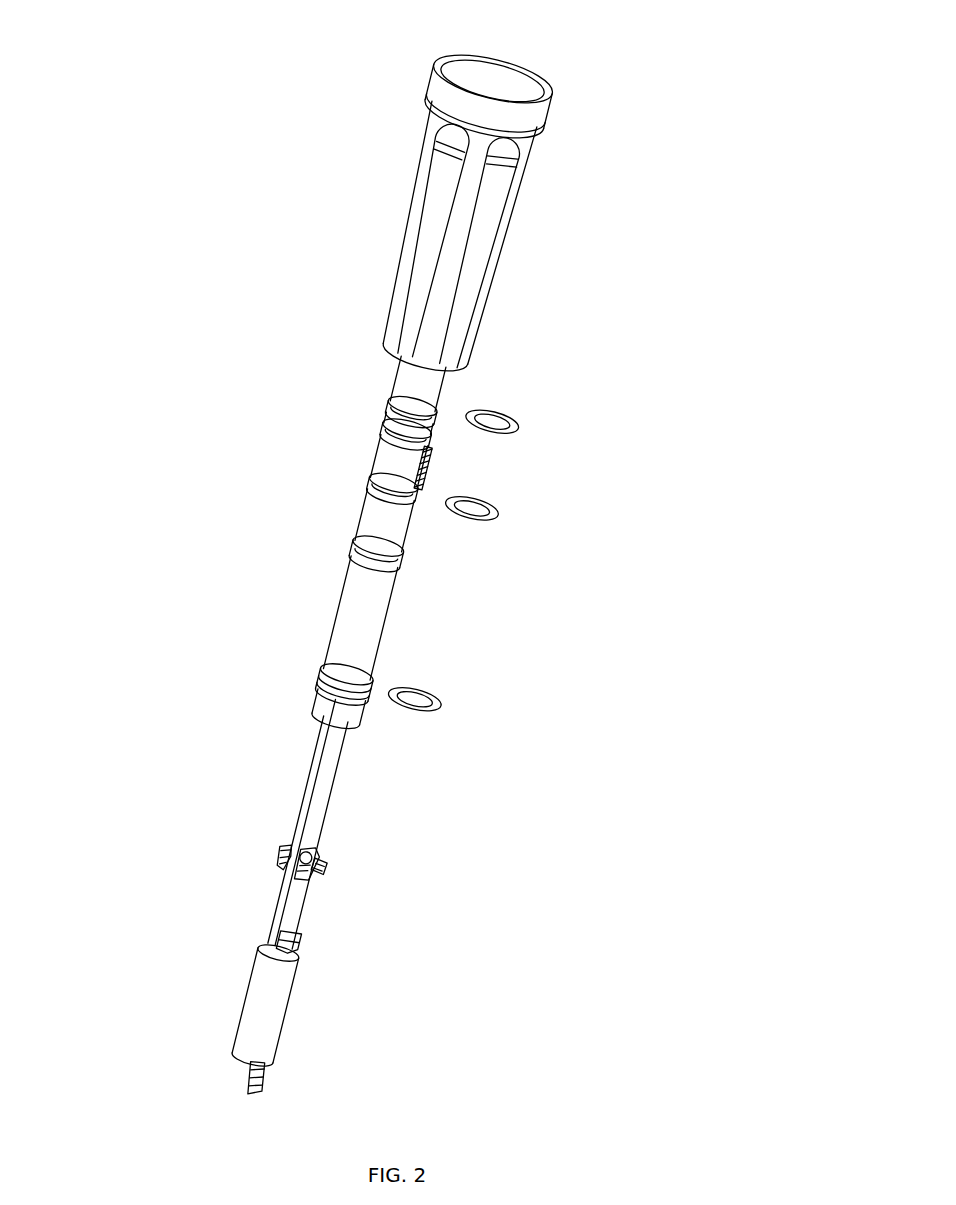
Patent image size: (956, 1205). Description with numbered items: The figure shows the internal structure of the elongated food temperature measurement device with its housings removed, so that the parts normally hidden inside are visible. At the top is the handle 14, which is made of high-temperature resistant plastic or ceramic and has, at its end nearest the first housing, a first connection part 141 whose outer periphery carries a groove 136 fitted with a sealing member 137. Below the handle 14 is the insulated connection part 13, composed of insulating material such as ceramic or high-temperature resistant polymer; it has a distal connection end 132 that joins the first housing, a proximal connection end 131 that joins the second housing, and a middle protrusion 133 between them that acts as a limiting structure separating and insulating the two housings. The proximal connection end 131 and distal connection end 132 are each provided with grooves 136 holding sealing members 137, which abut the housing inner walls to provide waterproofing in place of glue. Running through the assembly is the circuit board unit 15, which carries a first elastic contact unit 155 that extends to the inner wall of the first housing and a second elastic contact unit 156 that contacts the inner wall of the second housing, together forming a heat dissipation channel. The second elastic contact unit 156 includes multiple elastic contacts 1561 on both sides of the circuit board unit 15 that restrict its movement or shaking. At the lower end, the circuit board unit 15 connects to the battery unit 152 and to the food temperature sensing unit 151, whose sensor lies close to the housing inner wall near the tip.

The handle 14 is at (517, 206).
The first connection part 141 is at (392, 374).
The insulated connection part 13 is at (397, 591).
The groove 136 is at (390, 405).
The distal connection end 132 is at (390, 440).
The middle protrusion 133 is at (358, 548).
The proximal connection end 131 is at (318, 697).
The first elastic contact unit 155 is at (428, 474).
The sealing member 137 is at (522, 422).
The circuit board unit 15 is at (314, 812).
The second elastic contact unit 156 is at (325, 856).
The elastic contact 1561 is at (280, 848).
The battery unit 152 is at (250, 1012).
The food temperature sensing unit 151 is at (253, 1093).